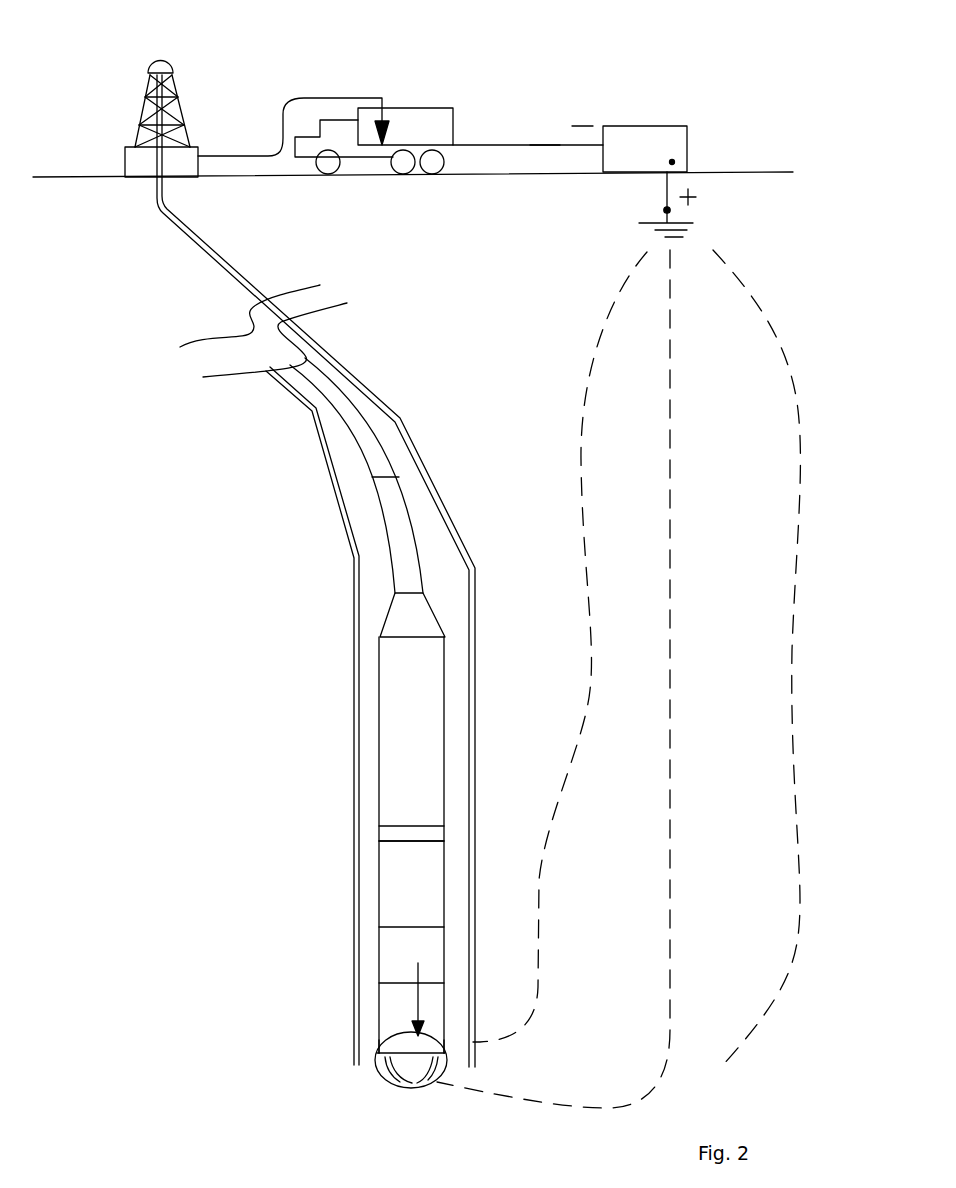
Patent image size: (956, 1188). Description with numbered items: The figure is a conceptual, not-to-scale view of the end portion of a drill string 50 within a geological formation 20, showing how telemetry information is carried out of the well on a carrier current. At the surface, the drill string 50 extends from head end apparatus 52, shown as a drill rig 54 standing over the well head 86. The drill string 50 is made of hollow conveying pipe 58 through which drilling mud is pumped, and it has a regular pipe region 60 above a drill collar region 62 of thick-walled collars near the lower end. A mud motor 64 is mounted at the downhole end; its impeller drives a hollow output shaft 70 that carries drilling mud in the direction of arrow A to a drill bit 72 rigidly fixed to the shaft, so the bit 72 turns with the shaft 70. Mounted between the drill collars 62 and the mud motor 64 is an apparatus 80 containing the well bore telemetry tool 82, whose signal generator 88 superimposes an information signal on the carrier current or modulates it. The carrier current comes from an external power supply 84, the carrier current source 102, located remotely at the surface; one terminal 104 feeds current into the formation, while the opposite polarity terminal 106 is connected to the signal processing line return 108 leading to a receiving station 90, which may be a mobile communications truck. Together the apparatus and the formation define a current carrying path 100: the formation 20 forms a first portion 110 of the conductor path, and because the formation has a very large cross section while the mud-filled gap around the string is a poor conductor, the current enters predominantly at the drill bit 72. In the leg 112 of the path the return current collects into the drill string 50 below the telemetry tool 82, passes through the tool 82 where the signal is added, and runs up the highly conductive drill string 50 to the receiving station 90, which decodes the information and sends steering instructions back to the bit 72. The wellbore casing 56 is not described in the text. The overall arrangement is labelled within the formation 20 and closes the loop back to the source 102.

The geological formation 20 is at (808, 37).
The drill rig 54 is at (145, 78).
The head end apparatus 52 is at (178, 97).
The well head 86 is at (155, 176).
The wellbore casing 56 is at (316, 571).
The current carrying path 100 is at (285, 108).
The receiving station 90 is at (408, 133).
The signal processing line return 108 is at (493, 143).
The terminal of opposite polarity 106 is at (543, 143).
The power supply 84 is at (675, 148).
The carrier current source 102 is at (672, 162).
The terminal or pole 104 is at (667, 210).
The first portion of the current conductor path 110 is at (729, 453).
The conveying pipe 58 is at (335, 383).
The regular pipe region 60 is at (375, 427).
The drill string 50 is at (407, 531).
The leg of the electrical path 112 is at (408, 575).
The drill collar region 62 is at (405, 690).
The signal generator 88 is at (402, 834).
The apparatus 80 is at (403, 855).
The well bore telemetry tool 82 is at (403, 887).
The mud motor 64 is at (402, 957).
The output shaft 70 is at (400, 1025).
The arrow A is at (420, 997).
The drill bit 72 is at (385, 1072).